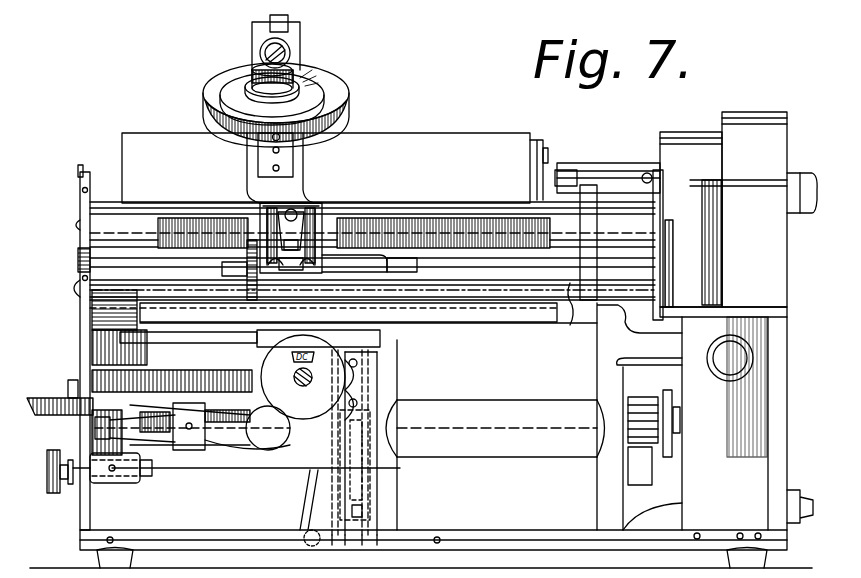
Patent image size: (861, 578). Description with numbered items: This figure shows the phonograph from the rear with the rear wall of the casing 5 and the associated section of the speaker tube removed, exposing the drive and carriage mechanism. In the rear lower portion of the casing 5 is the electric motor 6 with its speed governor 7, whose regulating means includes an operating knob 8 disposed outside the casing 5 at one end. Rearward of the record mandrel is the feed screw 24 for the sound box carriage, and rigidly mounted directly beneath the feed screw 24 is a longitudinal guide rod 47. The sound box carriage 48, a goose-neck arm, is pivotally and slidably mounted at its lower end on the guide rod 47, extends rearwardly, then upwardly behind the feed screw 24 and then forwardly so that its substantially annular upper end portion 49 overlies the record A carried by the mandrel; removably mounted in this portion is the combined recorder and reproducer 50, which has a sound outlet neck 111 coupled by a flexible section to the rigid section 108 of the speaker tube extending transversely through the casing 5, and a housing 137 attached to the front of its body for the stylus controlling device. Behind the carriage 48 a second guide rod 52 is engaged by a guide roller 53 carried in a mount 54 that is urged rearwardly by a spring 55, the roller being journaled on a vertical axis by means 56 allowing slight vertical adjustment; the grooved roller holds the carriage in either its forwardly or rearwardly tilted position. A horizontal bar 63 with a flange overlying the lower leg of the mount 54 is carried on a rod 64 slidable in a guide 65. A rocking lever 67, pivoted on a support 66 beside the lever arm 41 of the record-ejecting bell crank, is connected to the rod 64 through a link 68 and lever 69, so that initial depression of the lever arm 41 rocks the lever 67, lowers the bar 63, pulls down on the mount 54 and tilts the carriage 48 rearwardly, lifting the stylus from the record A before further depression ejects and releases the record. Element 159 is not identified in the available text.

The casing 5 is at (78, 313).
The electric motor 6 is at (497, 426).
The speed governor 7 is at (232, 448).
The operating knob 8 is at (48, 485).
The feed screw 24 is at (420, 220).
The lever arm 41 is at (55, 400).
The guide rod 47 is at (513, 275).
The sound box carriage 48 is at (318, 192).
The annular upper end portion 49 is at (347, 100).
The combined recorder and reproducer 50 is at (320, 80).
The second guide rod 52 is at (567, 315).
The guide roller 53 is at (335, 266).
The mount 54 is at (243, 253).
The spring 55 is at (250, 210).
The roller adjusting means 56 is at (300, 250).
The horizontal bar 63 is at (489, 316).
The rod 64 is at (380, 340).
The guide 65 is at (380, 470).
The support 66 is at (312, 485).
The rocking lever 67 is at (378, 413).
The link 68 is at (340, 470).
The lever 69 is at (365, 518).
The rigid section 108 is at (707, 378).
The sound outlet neck 111 is at (254, 48).
The housing 137 is at (295, 32).
The cylinder housing 159 is at (120, 560).
The record A is at (440, 142).